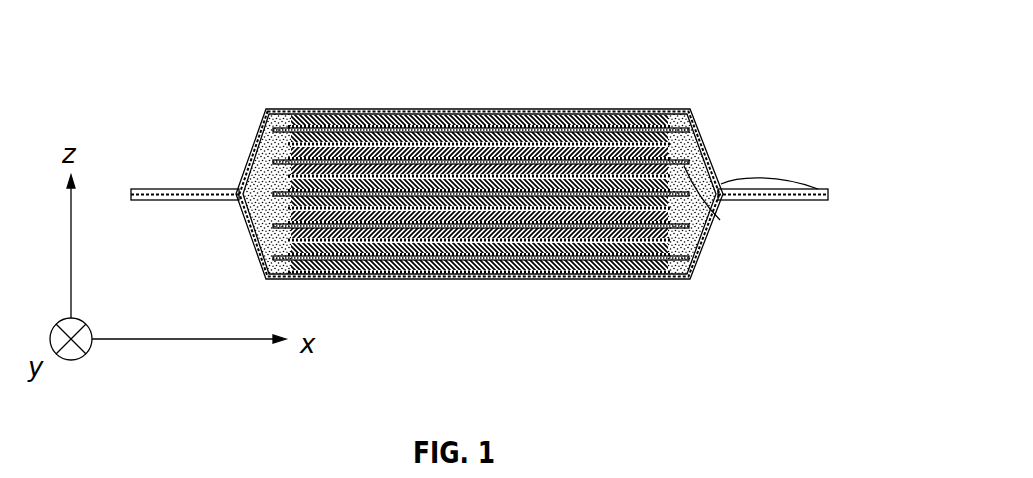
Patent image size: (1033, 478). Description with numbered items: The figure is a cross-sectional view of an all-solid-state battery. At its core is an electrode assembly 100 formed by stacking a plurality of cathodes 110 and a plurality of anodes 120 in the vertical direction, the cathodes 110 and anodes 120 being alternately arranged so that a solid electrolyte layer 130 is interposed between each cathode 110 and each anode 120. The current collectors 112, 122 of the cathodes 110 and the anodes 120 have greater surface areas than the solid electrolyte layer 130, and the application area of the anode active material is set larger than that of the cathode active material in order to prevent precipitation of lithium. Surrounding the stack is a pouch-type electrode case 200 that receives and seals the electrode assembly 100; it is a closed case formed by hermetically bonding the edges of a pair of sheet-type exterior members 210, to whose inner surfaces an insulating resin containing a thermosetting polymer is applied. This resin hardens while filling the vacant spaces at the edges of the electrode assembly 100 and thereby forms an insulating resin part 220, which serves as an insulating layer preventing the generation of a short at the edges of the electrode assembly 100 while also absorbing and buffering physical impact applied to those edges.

The electrode assembly 100 is at (508, 186).
The cathodes 110 is at (680, 113).
The current collector of the cathode 112 is at (676, 102).
The anodes 120 is at (680, 143).
The current collector of the anode 122 is at (820, 192).
The solid electrolyte layer 130 is at (712, 212).
The electrode case 200 is at (488, 186).
The exterior members 210 is at (458, 102).
The insulating resin part 220 is at (699, 258).